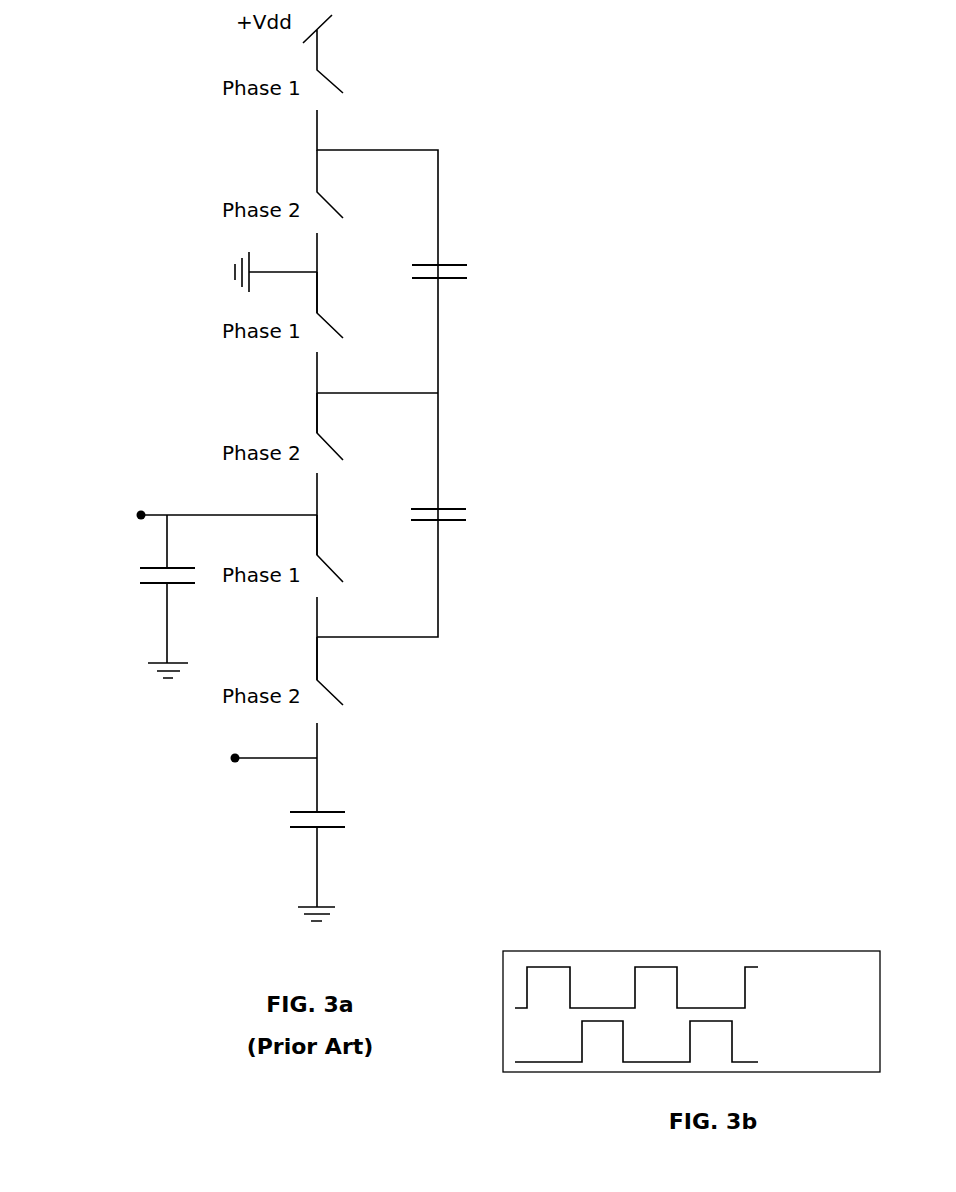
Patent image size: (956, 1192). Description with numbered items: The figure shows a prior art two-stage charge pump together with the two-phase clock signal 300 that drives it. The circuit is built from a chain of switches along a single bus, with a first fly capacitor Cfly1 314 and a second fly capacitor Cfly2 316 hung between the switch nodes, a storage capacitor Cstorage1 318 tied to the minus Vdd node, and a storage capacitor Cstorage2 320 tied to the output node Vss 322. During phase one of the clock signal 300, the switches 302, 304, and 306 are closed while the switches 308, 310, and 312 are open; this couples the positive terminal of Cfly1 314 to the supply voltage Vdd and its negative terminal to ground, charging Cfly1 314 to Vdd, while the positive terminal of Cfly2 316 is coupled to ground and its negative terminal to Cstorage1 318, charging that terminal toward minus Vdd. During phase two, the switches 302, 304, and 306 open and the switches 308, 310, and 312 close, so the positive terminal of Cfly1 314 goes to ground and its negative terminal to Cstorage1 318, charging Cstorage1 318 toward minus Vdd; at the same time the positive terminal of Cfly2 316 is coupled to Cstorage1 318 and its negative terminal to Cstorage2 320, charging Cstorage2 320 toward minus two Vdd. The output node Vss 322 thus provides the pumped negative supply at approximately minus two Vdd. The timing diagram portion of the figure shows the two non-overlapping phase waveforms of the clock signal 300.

In FIG. 3B, the two-phase clock signal 300 is at (650, 951).
In FIG. 3A, the switch 302 is at (341, 90).
In FIG. 3A, the switch 304 is at (341, 336).
In FIG. 3A, the switch 306 is at (341, 580).
In FIG. 3A, the switch 308 is at (341, 216).
In FIG. 3A, the switch 310 is at (341, 458).
In FIG. 3A, the switch 312 is at (341, 703).
In FIG. 3A, the fly capacitor Cfly1 314 is at (458, 264).
In FIG. 3A, the fly capacitor Cfly2 316 is at (460, 507).
In FIG. 3A, the storage capacitor Cstorage1 318 is at (145, 586).
In FIG. 3A, the storage capacitor Cstorage2 320 is at (340, 811).
In FIG. 3A, the output node Vss 322 is at (235, 762).